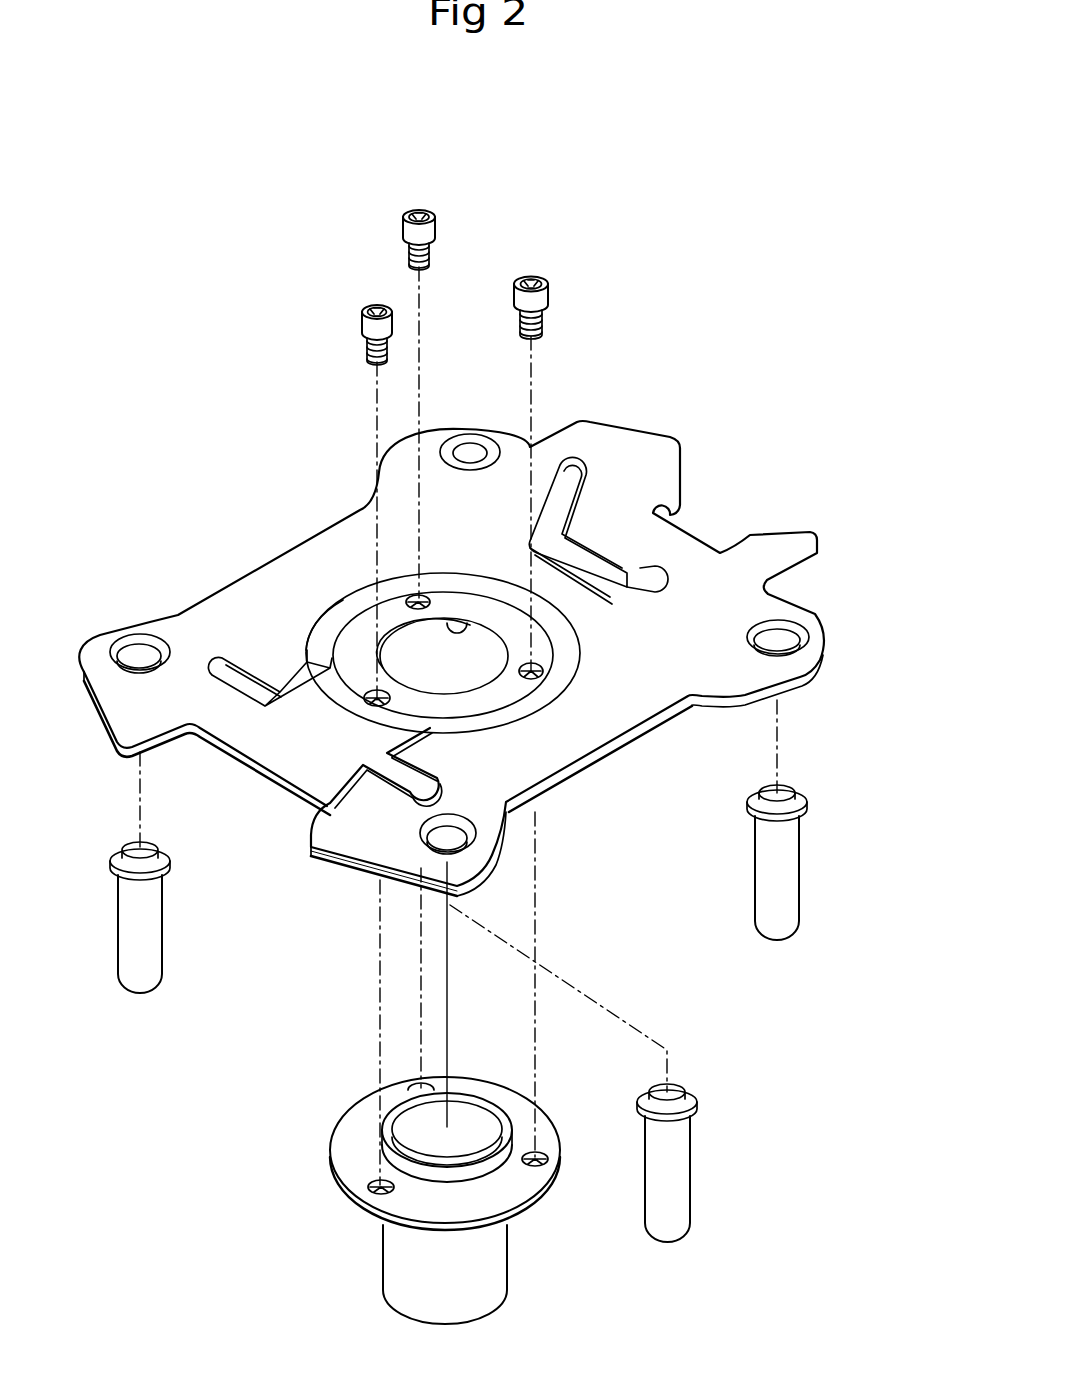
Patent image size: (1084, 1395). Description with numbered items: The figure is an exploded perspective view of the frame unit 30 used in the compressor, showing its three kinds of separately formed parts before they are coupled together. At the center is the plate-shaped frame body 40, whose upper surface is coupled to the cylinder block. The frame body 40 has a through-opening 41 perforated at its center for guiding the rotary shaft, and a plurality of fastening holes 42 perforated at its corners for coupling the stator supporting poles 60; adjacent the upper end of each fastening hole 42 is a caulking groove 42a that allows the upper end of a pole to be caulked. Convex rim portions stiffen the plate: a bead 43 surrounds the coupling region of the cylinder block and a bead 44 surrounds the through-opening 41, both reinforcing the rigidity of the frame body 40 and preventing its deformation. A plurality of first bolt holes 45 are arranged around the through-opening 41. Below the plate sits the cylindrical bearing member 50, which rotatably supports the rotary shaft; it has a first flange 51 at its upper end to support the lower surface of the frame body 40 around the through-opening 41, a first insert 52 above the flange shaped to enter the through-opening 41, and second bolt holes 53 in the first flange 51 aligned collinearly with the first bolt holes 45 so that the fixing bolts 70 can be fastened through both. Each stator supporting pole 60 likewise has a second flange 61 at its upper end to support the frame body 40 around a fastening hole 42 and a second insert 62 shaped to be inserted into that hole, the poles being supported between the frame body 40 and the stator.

The frame unit 30 is at (205, 498).
The frame body 40 is at (692, 420).
The through-opening 41 is at (470, 625).
The fastening hole 42 is at (503, 823).
The caulking groove 42a is at (410, 843).
The bead 43 is at (665, 568).
The bead 44 is at (337, 613).
The first bolt hole 45 is at (550, 660).
The bearing member 50 is at (372, 1258).
The first flange 51 is at (513, 1193).
The first insert 52 is at (508, 1137).
The second bolt hole 53 is at (377, 1183).
The stator supporting pole 60 is at (808, 882).
The second flange 61 is at (803, 805).
The second insert 62 is at (797, 780).
The fixing bolt 70 is at (540, 297).